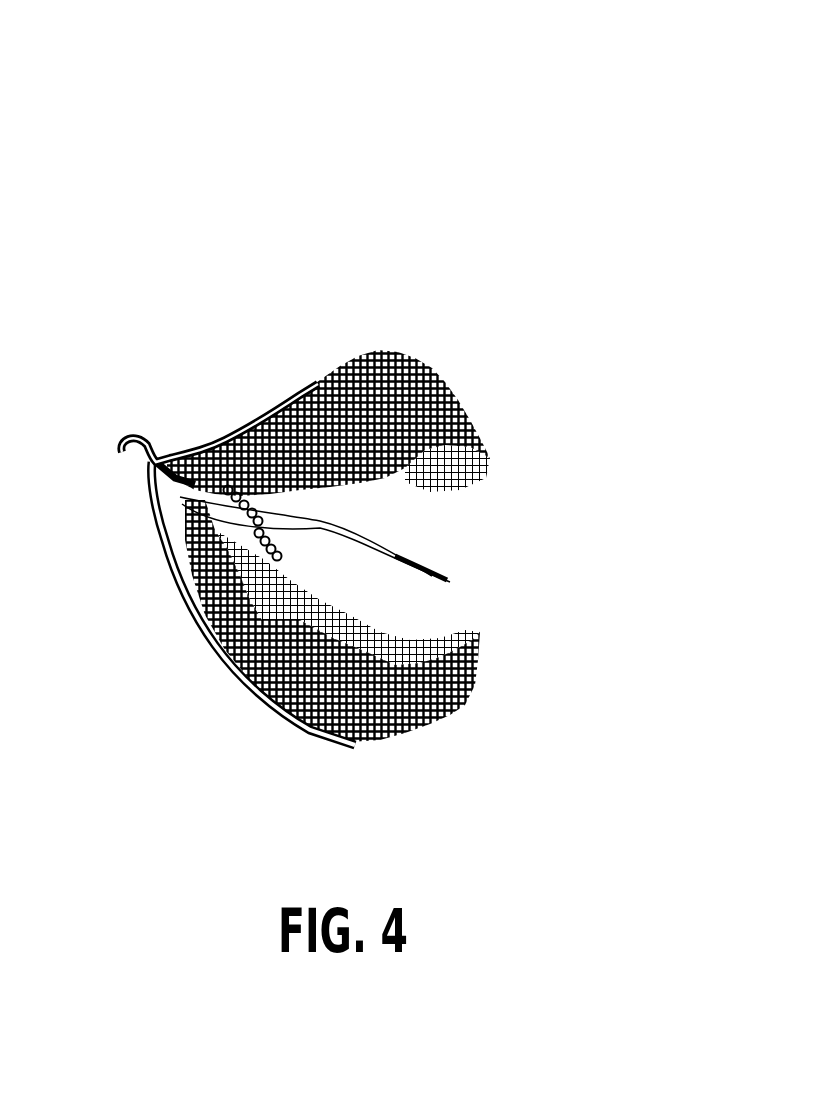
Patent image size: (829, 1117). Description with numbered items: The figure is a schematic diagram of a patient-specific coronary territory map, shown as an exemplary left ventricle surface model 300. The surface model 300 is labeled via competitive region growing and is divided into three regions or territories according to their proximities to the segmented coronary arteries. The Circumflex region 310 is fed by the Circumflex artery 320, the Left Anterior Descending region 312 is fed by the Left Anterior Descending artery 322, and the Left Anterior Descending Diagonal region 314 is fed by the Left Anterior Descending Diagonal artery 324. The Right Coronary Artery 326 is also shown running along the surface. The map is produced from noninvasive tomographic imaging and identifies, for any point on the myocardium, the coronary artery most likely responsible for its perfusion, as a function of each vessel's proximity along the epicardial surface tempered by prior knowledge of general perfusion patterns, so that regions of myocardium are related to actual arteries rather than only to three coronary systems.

The left ventricle surface model 300 is at (433, 100).
The Circumflex region 310 is at (500, 507).
The Left Anterior Descending region 312 is at (445, 715).
The Left Anterior Descending Diagonal region 314 is at (383, 388).
The Circumflex artery 320 is at (320, 528).
The Left Anterior Descending artery 322 is at (260, 702).
The Left Anterior Descending Diagonal artery 324 is at (238, 490).
The Right Coronary Artery 326 is at (182, 458).